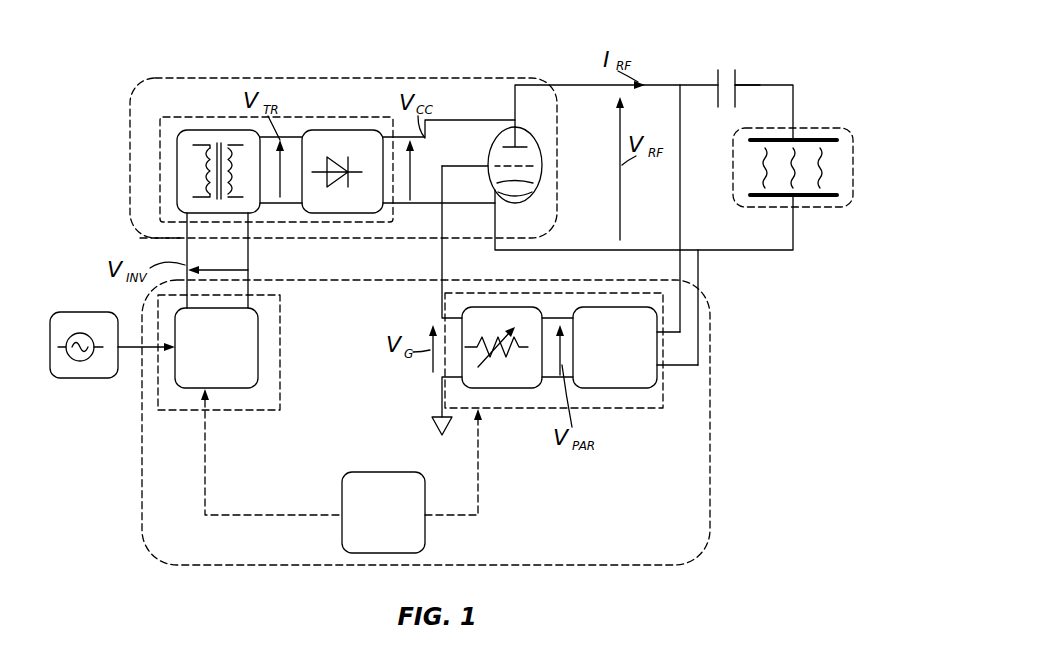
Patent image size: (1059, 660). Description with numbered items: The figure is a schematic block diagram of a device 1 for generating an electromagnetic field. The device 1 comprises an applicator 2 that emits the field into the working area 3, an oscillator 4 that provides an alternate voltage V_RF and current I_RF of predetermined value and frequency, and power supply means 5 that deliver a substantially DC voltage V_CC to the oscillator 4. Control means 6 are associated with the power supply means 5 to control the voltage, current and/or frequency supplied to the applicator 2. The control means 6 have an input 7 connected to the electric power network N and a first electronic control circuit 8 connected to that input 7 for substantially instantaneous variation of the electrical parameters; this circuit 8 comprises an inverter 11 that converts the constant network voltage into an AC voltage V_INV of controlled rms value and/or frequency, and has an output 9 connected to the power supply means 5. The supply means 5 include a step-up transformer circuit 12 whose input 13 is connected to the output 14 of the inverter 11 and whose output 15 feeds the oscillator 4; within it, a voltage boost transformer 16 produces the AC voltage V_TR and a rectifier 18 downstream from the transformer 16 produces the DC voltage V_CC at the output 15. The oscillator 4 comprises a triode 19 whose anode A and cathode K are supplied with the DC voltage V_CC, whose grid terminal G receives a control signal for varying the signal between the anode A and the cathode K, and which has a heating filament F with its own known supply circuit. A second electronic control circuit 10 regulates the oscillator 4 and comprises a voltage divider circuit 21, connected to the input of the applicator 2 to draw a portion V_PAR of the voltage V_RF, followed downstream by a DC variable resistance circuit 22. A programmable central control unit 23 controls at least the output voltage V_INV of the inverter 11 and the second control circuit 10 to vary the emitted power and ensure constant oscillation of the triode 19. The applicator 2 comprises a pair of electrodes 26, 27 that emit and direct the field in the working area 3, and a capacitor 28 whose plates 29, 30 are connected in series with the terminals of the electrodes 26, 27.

The device 1 is at (805, 67).
The applicator 2 is at (853, 148).
The working area 3 is at (832, 183).
The oscillator 4 is at (528, 113).
The power supply means 5 is at (395, 78).
The control means 6 is at (708, 350).
The input 7 is at (140, 350).
The first electronic control circuit 8 is at (280, 375).
The output 9 is at (252, 272).
The second electronic control circuit 10 is at (665, 402).
The inverter 11 is at (237, 392).
The step-up transformer circuit 12 is at (158, 142).
The input 13 is at (148, 233).
The output 14 is at (262, 305).
The output 15 is at (405, 210).
The voltage boost transformer 16 is at (202, 128).
The rectifier 18 is at (333, 128).
The triode 19 is at (545, 172).
The voltage divider circuit 21 is at (620, 392).
The DC variable resistance circuit 22 is at (505, 392).
The programmable central control unit 23 is at (342, 505).
The electrode 26 is at (765, 205).
The electrode 27 is at (810, 138).
The capacitor 28 is at (724, 62).
The plate 29 is at (715, 87).
The plate 30 is at (738, 87).
The electric power network N is at (70, 380).
The anode A is at (513, 121).
The grid terminal G is at (487, 165).
The cathode K is at (494, 196).
The heating filament F is at (553, 221).